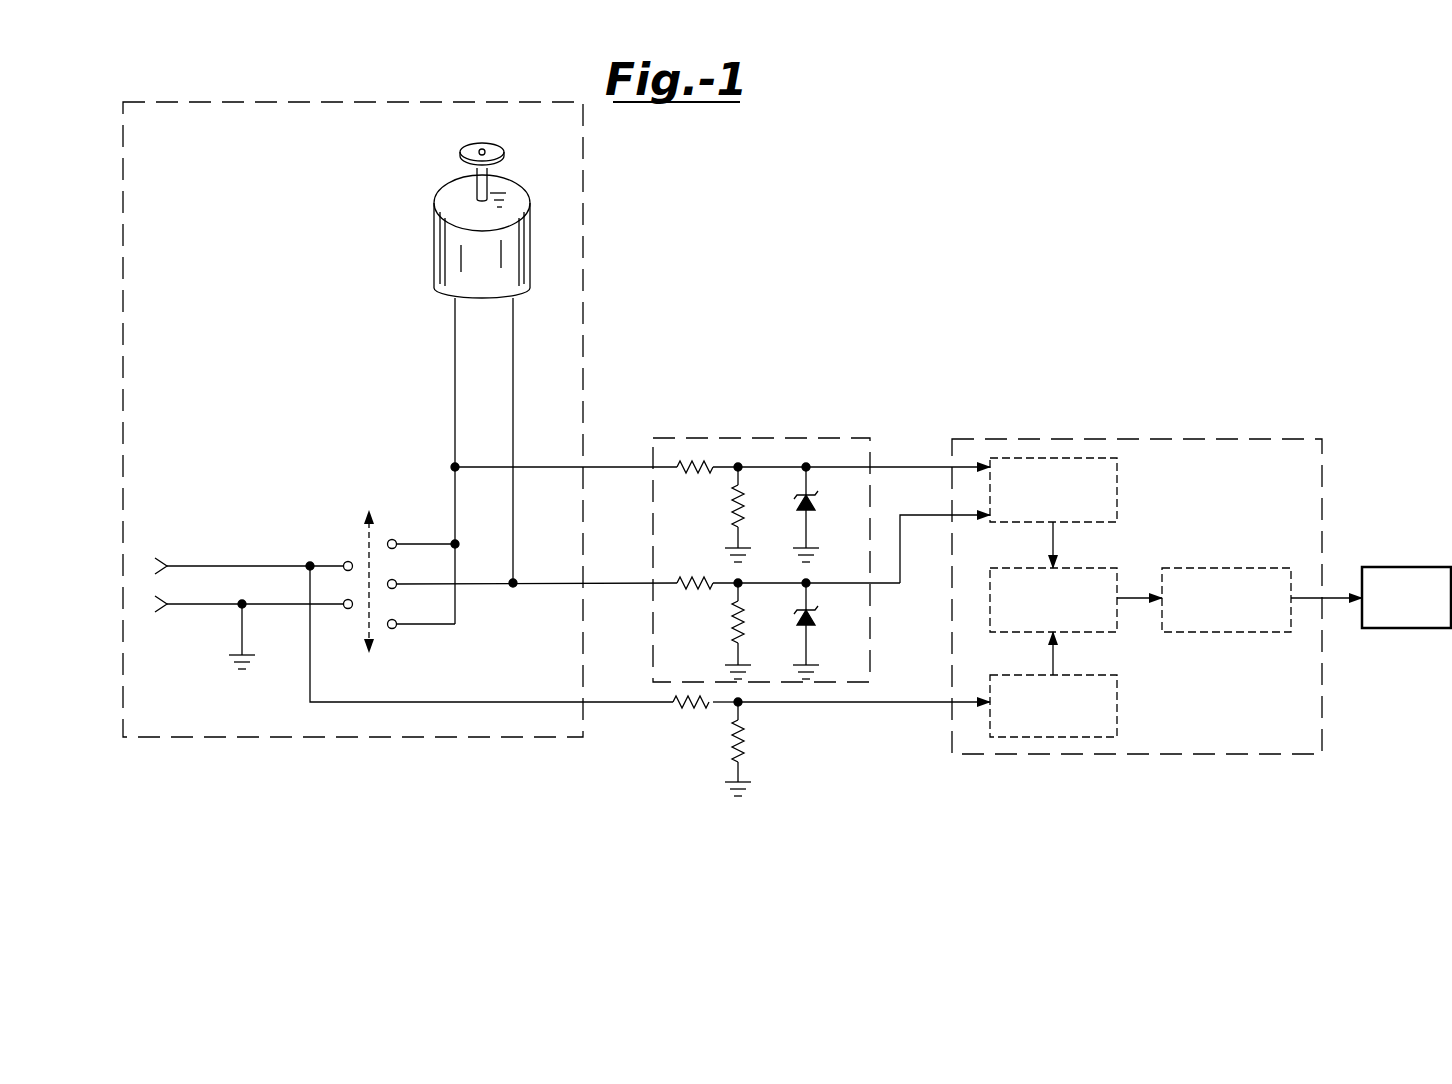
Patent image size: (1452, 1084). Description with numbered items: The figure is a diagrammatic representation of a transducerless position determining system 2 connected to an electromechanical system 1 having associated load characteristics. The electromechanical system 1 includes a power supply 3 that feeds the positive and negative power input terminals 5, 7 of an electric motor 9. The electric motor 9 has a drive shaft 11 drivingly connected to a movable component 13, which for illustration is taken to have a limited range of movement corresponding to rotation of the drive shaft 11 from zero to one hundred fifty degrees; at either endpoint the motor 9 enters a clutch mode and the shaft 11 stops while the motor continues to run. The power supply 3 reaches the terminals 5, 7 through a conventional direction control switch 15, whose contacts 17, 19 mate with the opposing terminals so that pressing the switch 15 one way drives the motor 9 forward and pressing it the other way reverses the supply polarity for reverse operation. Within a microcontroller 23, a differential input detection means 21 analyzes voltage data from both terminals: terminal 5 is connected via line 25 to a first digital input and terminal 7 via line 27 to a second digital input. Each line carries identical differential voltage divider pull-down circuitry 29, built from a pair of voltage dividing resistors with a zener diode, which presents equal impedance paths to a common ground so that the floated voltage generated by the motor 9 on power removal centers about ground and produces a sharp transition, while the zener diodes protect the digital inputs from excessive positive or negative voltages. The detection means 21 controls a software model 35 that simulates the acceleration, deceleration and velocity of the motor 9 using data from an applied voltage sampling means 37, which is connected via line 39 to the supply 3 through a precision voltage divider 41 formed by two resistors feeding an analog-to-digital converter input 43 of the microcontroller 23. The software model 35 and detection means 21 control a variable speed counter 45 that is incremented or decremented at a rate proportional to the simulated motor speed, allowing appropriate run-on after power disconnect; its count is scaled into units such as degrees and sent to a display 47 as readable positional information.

The electromechanical system 1 is at (590, 280).
The transducerless position determining system 2 is at (937, 405).
The power supply 3 is at (196, 621).
The positive power input terminal 5 is at (456, 292).
The negative power input terminal 7 is at (511, 292).
The electric motor 9 is at (436, 240).
The drive shaft 11 is at (476, 197).
The movable component 13 is at (476, 146).
The direction control switch 15 is at (355, 550).
The switch contact 17 is at (396, 566).
The switch contact 19 is at (396, 606).
The differential input detection means 21 is at (1115, 456).
The microcontroller 23 is at (1220, 438).
The line 25 is at (598, 467).
The line 27 is at (595, 583).
The differential voltage divider pull-down circuitry 29 is at (790, 437).
The software model 35 is at (1103, 567).
The applied voltage sampling means 37 is at (1092, 675).
The line 39 is at (597, 700).
The precision voltage divider 41 is at (778, 768).
The analog-to-digital converter input 43 is at (884, 700).
The variable speed counter 45 is at (1226, 567).
The display 47 is at (1375, 628).